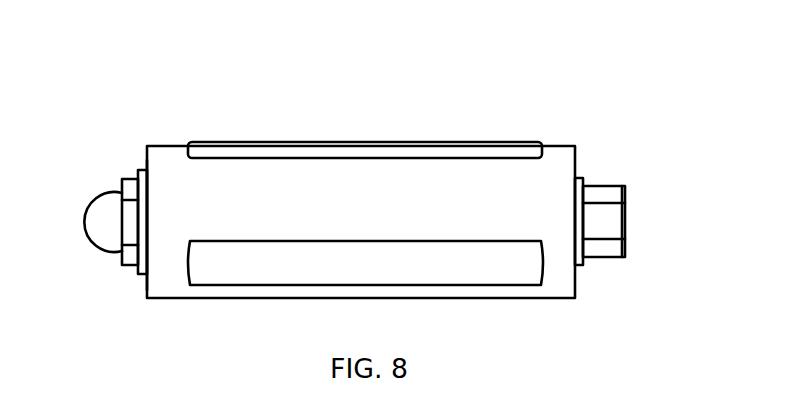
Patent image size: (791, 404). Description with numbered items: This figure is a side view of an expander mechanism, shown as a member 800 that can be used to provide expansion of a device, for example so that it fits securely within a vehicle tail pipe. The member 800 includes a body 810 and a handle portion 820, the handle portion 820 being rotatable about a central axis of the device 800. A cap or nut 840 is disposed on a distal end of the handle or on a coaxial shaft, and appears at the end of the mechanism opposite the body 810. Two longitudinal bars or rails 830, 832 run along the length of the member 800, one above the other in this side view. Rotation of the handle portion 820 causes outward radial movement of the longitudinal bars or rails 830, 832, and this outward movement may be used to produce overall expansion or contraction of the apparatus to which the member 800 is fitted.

The member 800 is at (556, 90).
The body 810 is at (614, 187).
The handle portion 820 is at (188, 190).
The longitudinal bar or rail 830 is at (336, 150).
The longitudinal bar or rail 832 is at (503, 268).
The cap or nut 840 is at (113, 205).